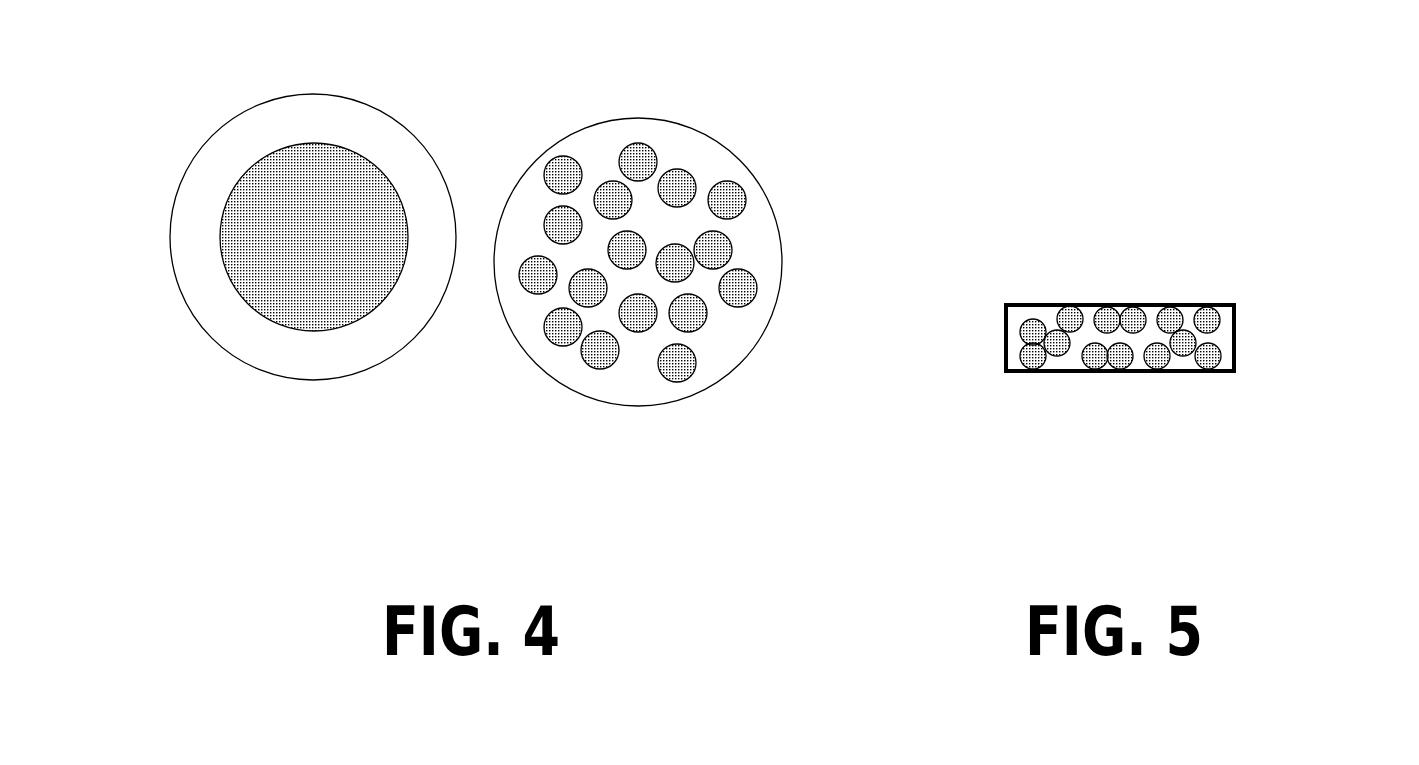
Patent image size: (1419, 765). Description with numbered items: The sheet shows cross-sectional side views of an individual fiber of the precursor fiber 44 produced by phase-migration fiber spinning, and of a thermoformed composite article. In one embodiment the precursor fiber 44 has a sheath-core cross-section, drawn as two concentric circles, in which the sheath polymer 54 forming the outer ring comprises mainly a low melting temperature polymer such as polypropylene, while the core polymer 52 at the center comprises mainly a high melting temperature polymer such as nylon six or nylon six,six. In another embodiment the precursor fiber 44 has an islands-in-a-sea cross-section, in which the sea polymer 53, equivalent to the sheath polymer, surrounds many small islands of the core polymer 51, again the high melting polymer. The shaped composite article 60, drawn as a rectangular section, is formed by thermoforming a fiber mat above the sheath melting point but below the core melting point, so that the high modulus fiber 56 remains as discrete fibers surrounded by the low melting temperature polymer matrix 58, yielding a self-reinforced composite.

In FIG. 4, the precursor fiber 44 is at (515, 319).
In FIG. 4, the core polymer (island polymer) 51 is at (643, 240).
In FIG. 4, the core polymer 52 is at (295, 240).
In FIG. 4, the sea polymer (sheath polymer) 53 is at (633, 382).
In FIG. 4, the sheath polymer 54 is at (320, 357).
In FIG. 5, the high modulus fiber 56 is at (1120, 353).
In FIG. 5, the low melting temperature polymer matrix 58 is at (1045, 317).
In FIG. 5, the shaped composite article 60 is at (1130, 357).